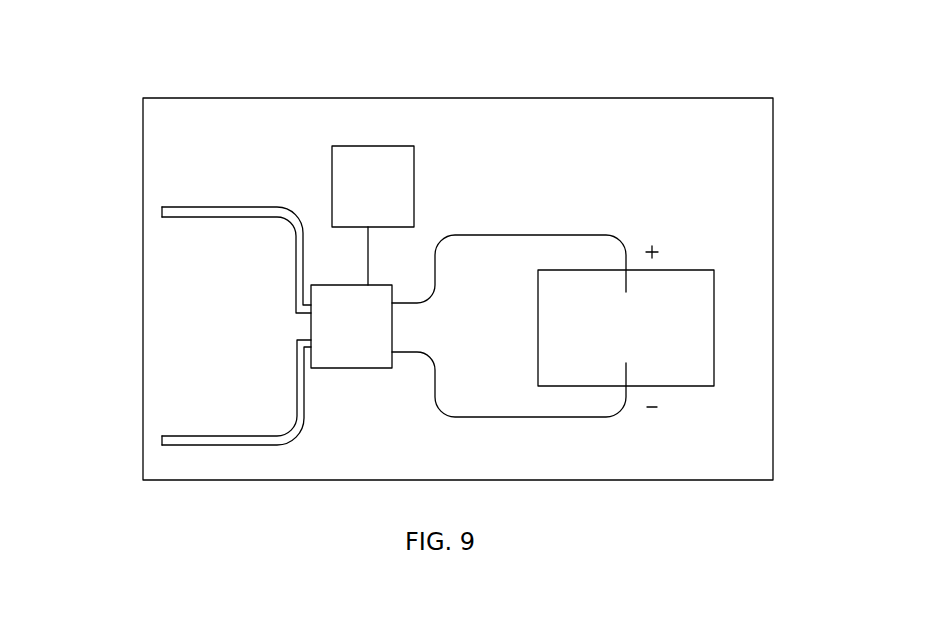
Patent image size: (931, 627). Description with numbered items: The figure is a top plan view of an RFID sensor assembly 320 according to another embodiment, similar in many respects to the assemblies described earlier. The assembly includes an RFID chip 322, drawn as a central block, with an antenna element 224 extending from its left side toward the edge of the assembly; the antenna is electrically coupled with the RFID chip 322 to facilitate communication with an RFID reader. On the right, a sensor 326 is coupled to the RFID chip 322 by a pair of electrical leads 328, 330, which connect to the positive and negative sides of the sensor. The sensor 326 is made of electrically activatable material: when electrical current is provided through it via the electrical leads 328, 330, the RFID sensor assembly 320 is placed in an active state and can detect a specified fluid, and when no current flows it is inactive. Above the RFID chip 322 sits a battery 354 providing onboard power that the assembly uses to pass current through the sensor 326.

The RFID sensor assembly 320 is at (148, 515).
The electrical leads (conductive strips) 224 is at (240, 200).
The battery 354 is at (373, 179).
The RFID chip 322 is at (351, 325).
The electrical lead 328 is at (538, 236).
The electrical lead 330 is at (538, 418).
The sensor 326 is at (702, 305).